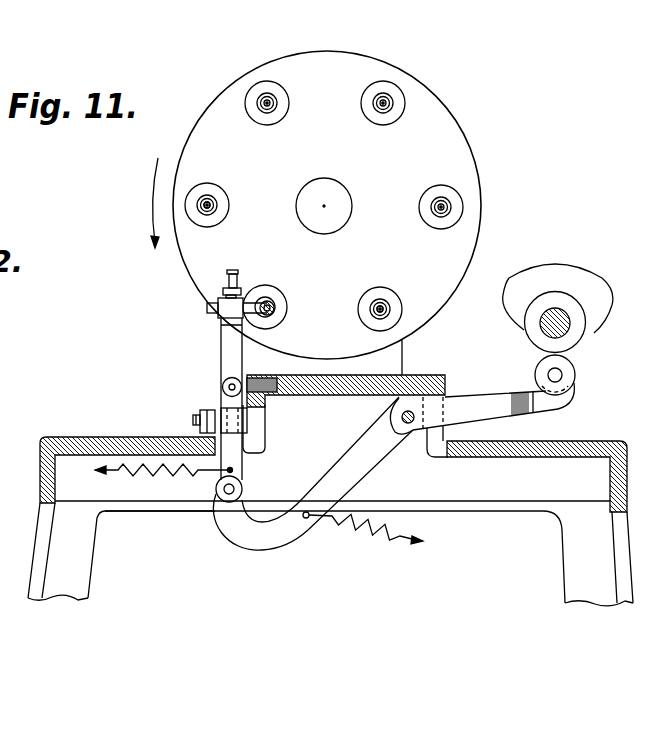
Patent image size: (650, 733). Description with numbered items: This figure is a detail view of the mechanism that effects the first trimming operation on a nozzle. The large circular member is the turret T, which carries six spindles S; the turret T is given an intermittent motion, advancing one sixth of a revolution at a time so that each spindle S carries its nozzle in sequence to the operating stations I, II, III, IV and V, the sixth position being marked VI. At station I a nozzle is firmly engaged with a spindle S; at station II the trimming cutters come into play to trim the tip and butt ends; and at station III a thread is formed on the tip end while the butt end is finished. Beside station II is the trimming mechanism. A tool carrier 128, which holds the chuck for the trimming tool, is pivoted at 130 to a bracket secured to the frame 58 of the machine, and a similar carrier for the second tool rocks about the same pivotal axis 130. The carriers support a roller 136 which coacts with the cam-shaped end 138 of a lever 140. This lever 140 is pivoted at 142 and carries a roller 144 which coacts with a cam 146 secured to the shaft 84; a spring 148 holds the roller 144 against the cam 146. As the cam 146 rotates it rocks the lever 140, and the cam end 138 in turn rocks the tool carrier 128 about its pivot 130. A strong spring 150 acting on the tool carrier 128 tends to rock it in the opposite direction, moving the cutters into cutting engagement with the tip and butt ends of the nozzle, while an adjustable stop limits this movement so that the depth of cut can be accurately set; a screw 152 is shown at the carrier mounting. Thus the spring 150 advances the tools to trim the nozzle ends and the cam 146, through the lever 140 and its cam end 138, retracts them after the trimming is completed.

The turret T is at (216, 99).
The spindles S is at (209, 207).
The first operating station I is at (213, 205).
The second operating station II is at (271, 297).
The third operating station III is at (380, 298).
The fourth operating station IV is at (427, 207).
The fifth operating station V is at (378, 117).
The station VI is at (267, 117).
The frame 58 is at (108, 427).
The shaft 84 is at (540, 330).
The tool carrier 128 is at (226, 362).
The pivot 130 is at (222, 388).
The roller 136 is at (243, 482).
The cam-shaped end 138 is at (253, 543).
The lever 140 is at (363, 451).
The pivot 142 is at (408, 423).
The roller 144 is at (535, 376).
The cam 146 is at (521, 277).
The spring 148 is at (372, 535).
The strong spring 150 is at (162, 478).
The set screw 152 is at (193, 420).